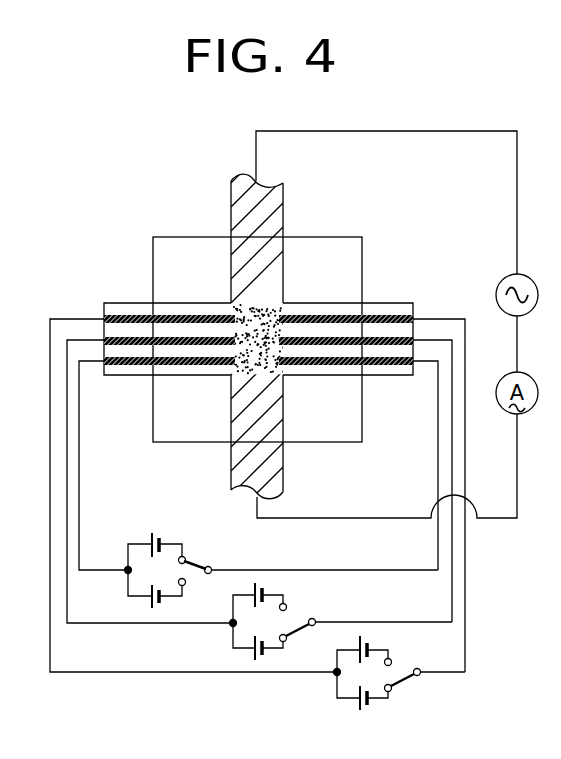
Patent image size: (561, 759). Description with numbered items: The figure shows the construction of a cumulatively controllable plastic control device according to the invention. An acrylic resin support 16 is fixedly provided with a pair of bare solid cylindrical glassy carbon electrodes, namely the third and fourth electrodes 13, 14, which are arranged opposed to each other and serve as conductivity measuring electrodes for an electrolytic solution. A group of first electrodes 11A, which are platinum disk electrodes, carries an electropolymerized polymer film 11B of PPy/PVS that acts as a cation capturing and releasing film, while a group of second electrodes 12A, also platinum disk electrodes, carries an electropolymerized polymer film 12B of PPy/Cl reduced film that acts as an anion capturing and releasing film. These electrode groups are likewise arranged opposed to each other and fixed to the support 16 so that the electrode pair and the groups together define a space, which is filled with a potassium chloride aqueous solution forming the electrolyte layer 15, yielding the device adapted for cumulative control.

The group of first electrodes 11A is at (161, 395).
The electropolymerized polymer film 11B is at (222, 322).
The group of second electrodes 12A is at (361, 357).
The electropolymerized polymer film 12B is at (287, 323).
The third electrode 13 is at (230, 212).
The fourth electrode 14 is at (231, 459).
The electrolyte layer 15 is at (263, 315).
The acrylic resin support 16 is at (160, 270).